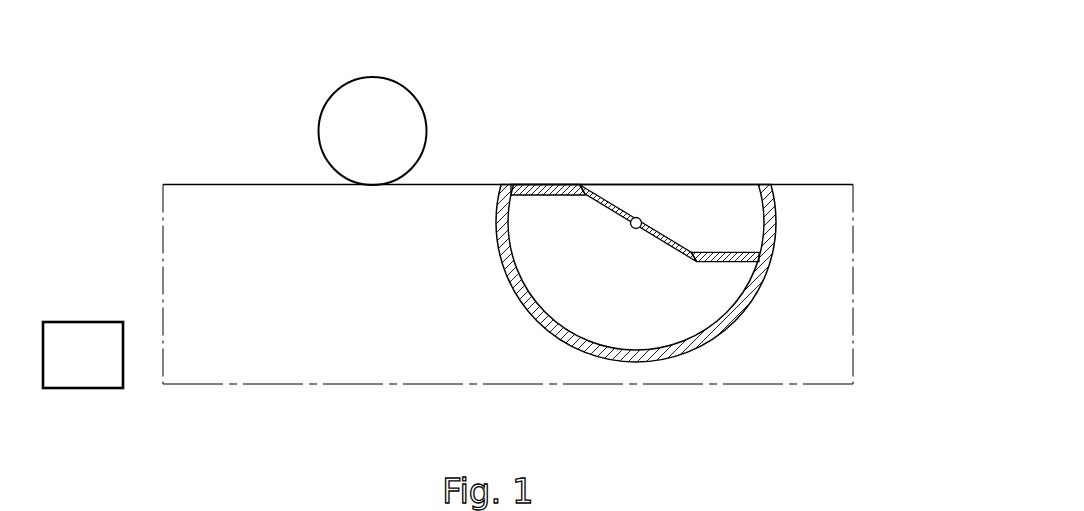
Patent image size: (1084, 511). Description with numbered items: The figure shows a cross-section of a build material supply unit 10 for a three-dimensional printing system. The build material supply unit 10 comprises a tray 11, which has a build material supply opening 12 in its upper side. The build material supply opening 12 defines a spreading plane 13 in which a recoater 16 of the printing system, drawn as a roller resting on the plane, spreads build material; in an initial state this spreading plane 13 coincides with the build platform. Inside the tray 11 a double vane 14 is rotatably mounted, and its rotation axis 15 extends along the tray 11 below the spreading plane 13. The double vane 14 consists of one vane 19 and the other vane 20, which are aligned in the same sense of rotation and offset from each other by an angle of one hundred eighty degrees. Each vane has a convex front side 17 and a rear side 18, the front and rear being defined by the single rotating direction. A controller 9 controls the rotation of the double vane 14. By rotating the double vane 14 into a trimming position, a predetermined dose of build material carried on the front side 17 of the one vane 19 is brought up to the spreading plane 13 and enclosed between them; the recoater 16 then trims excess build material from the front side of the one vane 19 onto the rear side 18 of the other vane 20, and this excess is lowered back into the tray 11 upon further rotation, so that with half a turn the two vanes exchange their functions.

The controller 9 is at (83, 355).
The build material supply unit 10 is at (805, 76).
The tray 11 is at (795, 211).
The build material supply opening 12 is at (645, 169).
The spreading plane 13 is at (256, 172).
The double vane 14 is at (606, 249).
The rotation axis 15 is at (638, 243).
The recoater 16 is at (324, 77).
The convex front side 17 is at (695, 275).
The rear side 18 is at (702, 239).
The one vane 19 is at (561, 170).
The other vane 20 is at (676, 227).